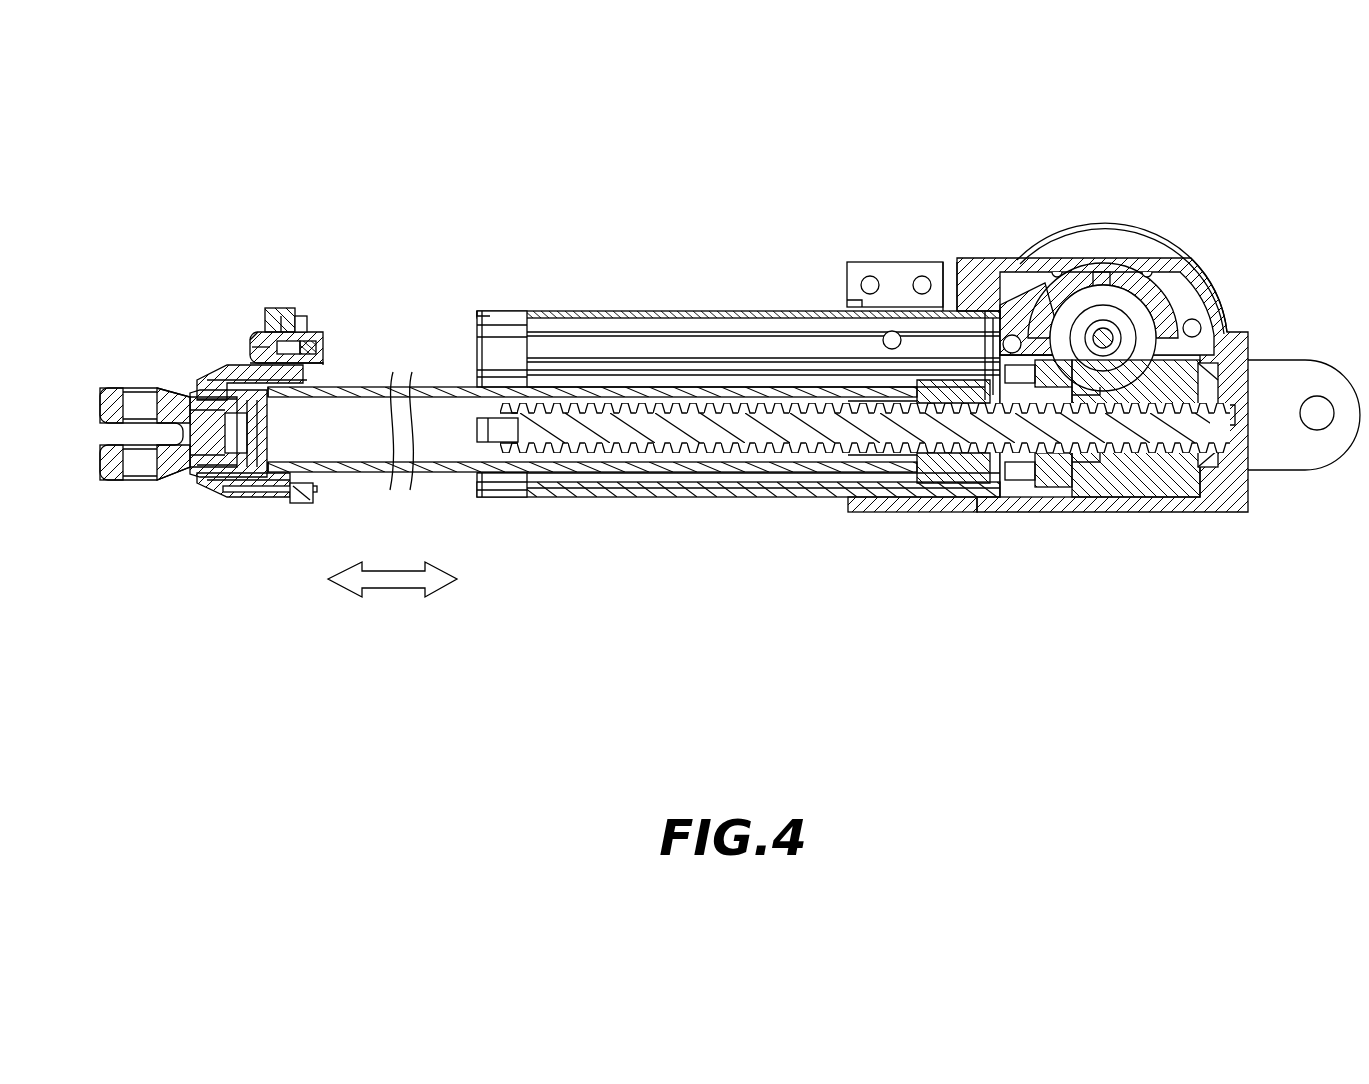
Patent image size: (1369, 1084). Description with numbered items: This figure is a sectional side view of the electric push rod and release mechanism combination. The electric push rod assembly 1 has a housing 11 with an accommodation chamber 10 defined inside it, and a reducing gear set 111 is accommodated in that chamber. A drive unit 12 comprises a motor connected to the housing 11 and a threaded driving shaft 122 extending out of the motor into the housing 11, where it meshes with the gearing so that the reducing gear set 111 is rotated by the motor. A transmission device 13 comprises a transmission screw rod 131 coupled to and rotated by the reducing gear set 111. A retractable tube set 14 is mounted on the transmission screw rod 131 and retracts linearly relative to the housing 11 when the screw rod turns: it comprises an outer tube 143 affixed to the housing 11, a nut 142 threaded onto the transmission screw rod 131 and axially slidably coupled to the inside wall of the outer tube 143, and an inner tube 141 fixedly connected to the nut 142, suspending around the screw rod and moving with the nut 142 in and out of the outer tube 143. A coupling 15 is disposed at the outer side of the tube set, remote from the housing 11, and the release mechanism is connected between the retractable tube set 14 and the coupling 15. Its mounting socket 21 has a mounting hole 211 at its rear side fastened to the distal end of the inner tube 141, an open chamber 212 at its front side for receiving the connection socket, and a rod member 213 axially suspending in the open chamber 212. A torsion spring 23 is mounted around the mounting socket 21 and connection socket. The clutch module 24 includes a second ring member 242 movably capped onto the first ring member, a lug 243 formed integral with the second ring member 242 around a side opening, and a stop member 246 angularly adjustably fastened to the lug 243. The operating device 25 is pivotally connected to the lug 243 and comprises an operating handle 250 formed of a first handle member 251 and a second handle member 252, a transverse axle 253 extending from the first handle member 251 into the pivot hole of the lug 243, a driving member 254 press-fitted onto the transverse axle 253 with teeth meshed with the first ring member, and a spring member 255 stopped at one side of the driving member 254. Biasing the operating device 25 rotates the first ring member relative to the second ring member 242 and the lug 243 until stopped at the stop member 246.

The electric push rod assembly 1 is at (846, 261).
The accommodation chamber 10 is at (999, 321).
The housing 11 is at (1162, 264).
The drive unit 12 is at (1117, 221).
The transmission device 13 is at (1177, 560).
The retractable tube set 14 is at (566, 311).
The coupling 15 is at (107, 400).
The mounting socket 21 is at (320, 488).
The torsion spring 23 is at (288, 490).
The clutch module 24 is at (228, 570).
The operating device 25 is at (313, 240).
The reducing gear set 111 is at (1198, 347).
The threaded driving shaft 122 is at (1110, 334).
The transmission screw rod 131 is at (1153, 413).
The inner tube 141 is at (453, 472).
The nut 142 is at (953, 463).
The outer tube 143 is at (727, 312).
The mounting hole 211 is at (305, 388).
The open chamber 212 is at (225, 372).
The rod member 213 is at (230, 437).
The second ring member 242 is at (267, 498).
The lug 243 is at (263, 307).
The stop member 246 is at (320, 334).
The operating handle 250 is at (188, 303).
The first handle member 251 is at (253, 333).
The second handle member 252 is at (320, 360).
The transverse axle 253 is at (250, 349).
The driving member 254 is at (306, 313).
The spring member 255 is at (280, 332).